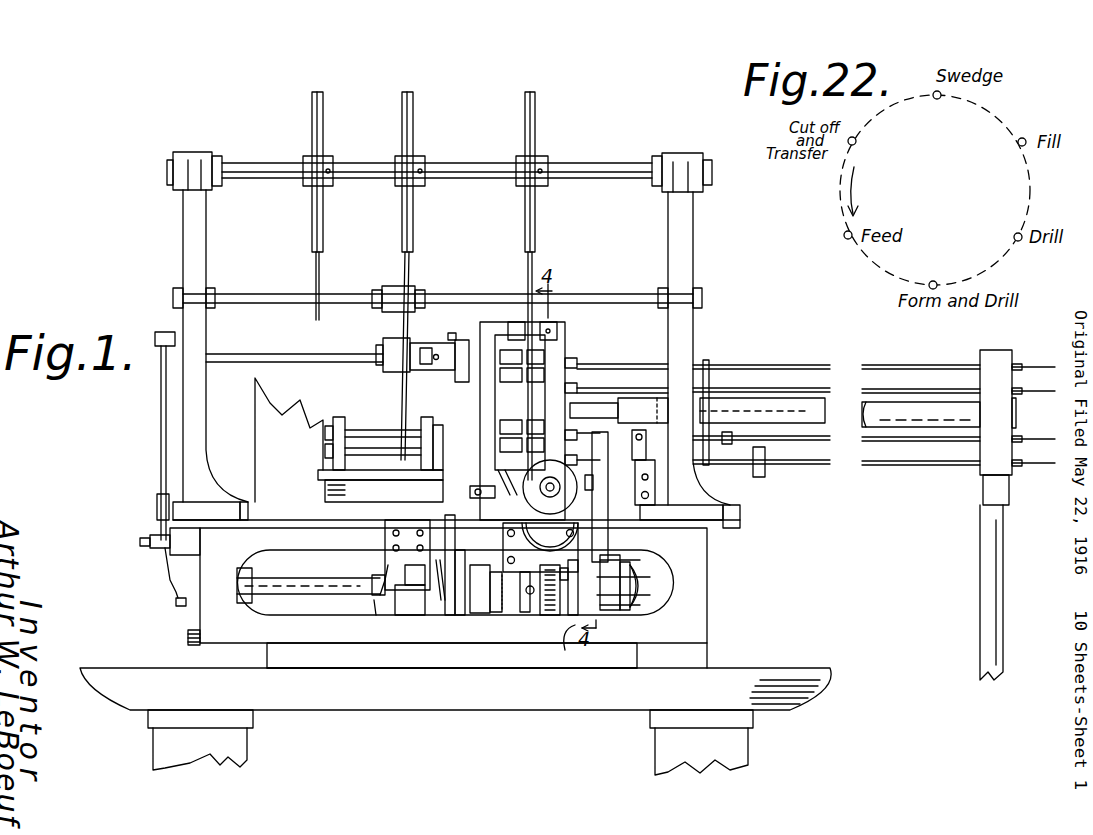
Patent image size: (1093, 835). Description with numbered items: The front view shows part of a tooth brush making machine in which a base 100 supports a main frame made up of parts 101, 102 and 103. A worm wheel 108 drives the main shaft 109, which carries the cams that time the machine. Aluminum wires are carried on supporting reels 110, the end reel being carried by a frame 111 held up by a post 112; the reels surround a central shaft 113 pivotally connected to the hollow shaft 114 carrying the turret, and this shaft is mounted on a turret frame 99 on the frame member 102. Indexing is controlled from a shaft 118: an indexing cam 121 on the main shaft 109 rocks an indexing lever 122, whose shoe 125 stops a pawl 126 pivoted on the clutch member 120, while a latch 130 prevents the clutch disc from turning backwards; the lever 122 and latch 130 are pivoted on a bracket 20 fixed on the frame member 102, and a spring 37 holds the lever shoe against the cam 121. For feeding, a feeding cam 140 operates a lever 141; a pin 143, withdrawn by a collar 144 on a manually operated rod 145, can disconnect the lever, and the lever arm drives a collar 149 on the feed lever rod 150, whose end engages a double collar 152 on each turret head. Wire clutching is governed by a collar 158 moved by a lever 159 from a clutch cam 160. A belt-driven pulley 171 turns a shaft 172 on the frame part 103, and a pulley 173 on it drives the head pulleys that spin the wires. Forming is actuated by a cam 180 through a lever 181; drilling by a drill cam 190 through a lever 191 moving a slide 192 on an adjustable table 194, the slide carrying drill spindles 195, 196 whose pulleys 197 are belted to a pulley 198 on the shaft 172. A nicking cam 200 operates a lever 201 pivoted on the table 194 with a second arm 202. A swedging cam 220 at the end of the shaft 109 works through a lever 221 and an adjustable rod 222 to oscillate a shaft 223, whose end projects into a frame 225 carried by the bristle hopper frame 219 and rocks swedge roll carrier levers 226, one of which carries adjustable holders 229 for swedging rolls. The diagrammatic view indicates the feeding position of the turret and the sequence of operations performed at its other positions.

The bracket 20 is at (503, 549).
The spring 37 is at (452, 655).
The turret frame 99 is at (565, 358).
The base 100 is at (478, 708).
The frame part 101 is at (707, 628).
The frame member 102 is at (707, 565).
The frame part 103 is at (183, 235).
The worm wheel 108 is at (553, 615).
The main shaft 109 is at (298, 588).
The supporting reels 110 is at (706, 360).
The frame 111 is at (1002, 347).
The post 112 is at (980, 533).
The central shaft 113 is at (921, 415).
The hollow shaft 114 is at (580, 402).
The shaft 118 is at (549, 522).
The clutch member 120 is at (585, 452).
The indexing cam 121 is at (578, 608).
The indexing lever 122 is at (584, 538).
The shoe 125 is at (603, 487).
The pawl 126 is at (607, 497).
The latch 130 is at (522, 478).
The feeding cam 140 is at (640, 612).
The lever 141 is at (650, 560).
The pin 143 is at (661, 482).
The collar 144 is at (648, 465).
The rod 145 is at (745, 465).
The collar 149 is at (721, 410).
The feed lever rod 150 is at (732, 436).
The double collar 152 is at (570, 375).
The collar 158 is at (514, 396).
The lever 159 is at (512, 592).
The clutch cam 160 is at (526, 612).
The pulley 171 is at (312, 104).
The shaft 172 is at (262, 179).
The pulley 173 is at (535, 118).
The cam 180 is at (425, 606).
The lever 181 is at (460, 567).
The drill cam 190 is at (388, 610).
The lever 191 is at (380, 553).
The slide 192 is at (384, 478).
The adjustable table 194 is at (320, 478).
The first drill spindle 195 is at (373, 445).
The second drill spindle 196 is at (379, 442).
The pulley 197 is at (425, 458).
The pulley 198 is at (413, 120).
The nicking cam 200 is at (464, 615).
The lever 201 is at (450, 525).
The arm 202 is at (470, 498).
The bristle hopper frame 219 is at (255, 431).
The swedging cam 220 is at (188, 632).
The lever 221 is at (175, 580).
The adjustable rod 222 is at (161, 453).
The shaft 223 is at (270, 350).
The frame 225 is at (390, 340).
The swedge roll carrier levers 226 is at (425, 343).
The adjustable holders 229 is at (460, 340).